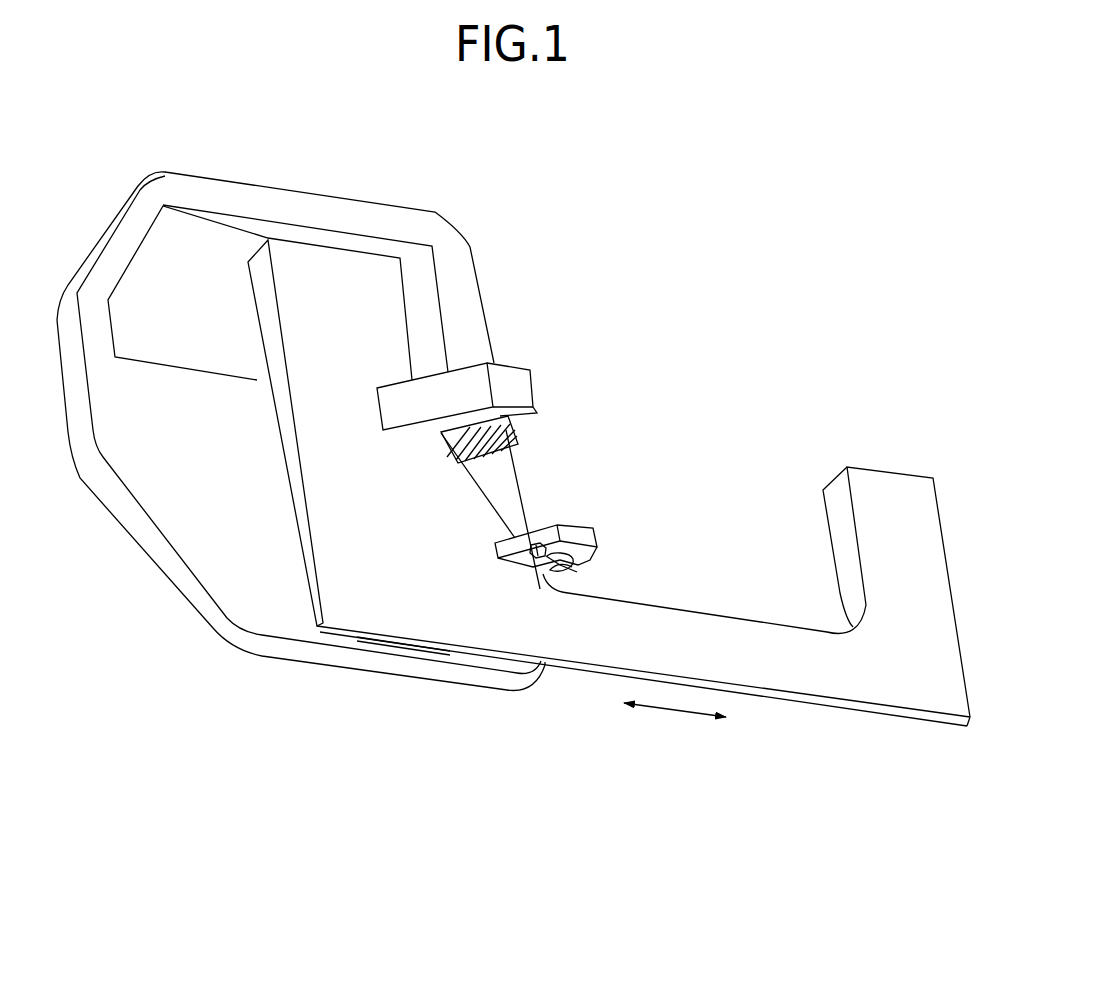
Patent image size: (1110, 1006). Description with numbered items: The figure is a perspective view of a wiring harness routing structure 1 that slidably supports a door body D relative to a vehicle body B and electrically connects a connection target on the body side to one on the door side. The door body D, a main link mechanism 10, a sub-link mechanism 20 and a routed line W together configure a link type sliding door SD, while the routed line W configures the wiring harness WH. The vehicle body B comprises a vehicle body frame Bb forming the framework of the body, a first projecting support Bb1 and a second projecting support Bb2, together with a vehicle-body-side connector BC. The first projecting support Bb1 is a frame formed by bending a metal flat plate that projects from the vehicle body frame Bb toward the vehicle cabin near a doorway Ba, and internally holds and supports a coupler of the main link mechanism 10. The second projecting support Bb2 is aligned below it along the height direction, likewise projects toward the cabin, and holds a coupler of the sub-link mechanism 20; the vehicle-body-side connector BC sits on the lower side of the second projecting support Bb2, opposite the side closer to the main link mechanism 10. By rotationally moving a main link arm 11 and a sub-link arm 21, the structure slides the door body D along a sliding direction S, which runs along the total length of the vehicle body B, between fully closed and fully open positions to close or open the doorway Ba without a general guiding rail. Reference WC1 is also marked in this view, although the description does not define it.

The wiring harness routing structure 1 is at (601, 415).
The main link mechanism 10 is at (481, 397).
The main link arm 11 is at (510, 338).
The sub-link mechanism 20 is at (496, 606).
The sub-link arm 21 is at (605, 509).
The door body D is at (247, 195).
The link type sliding door SD is at (442, 181).
The first projecting support Bb1 is at (426, 393).
The second projecting support Bb2 is at (495, 548).
The vehicle body B is at (643, 656).
The vehicle body frame Bb is at (858, 749).
The doorway Ba is at (721, 556).
The vehicle-body-side connector BC is at (537, 560).
The routed line W is at (563, 679).
The wiring harness WH is at (573, 566).
The wire crimp portion WC1 is at (542, 547).
The sliding direction S is at (675, 721).